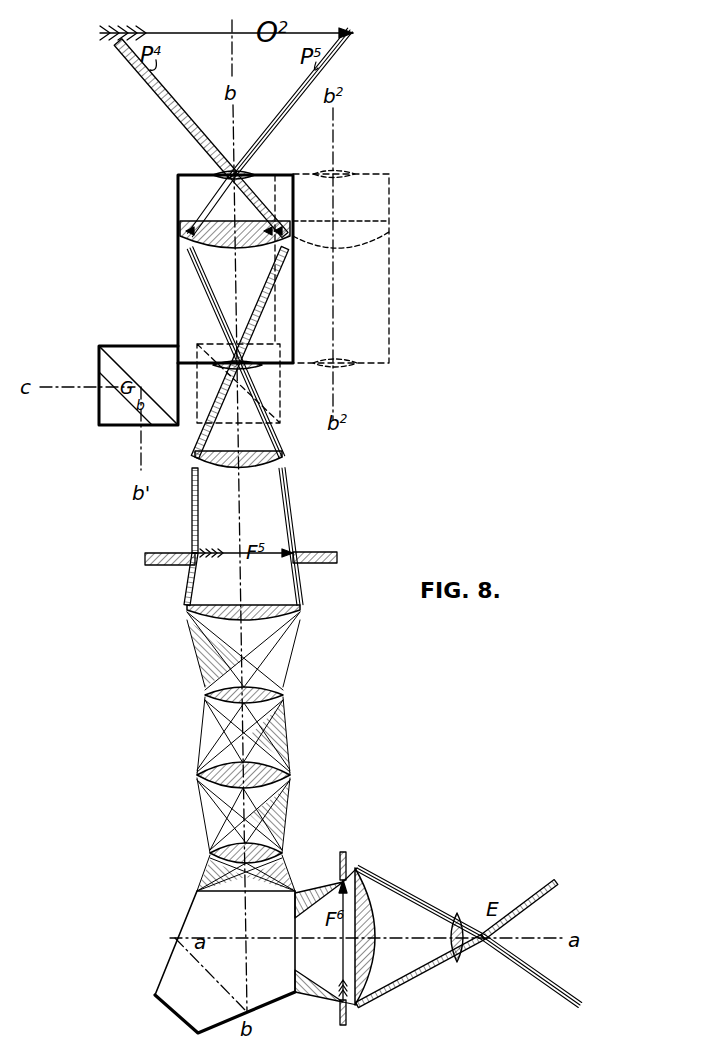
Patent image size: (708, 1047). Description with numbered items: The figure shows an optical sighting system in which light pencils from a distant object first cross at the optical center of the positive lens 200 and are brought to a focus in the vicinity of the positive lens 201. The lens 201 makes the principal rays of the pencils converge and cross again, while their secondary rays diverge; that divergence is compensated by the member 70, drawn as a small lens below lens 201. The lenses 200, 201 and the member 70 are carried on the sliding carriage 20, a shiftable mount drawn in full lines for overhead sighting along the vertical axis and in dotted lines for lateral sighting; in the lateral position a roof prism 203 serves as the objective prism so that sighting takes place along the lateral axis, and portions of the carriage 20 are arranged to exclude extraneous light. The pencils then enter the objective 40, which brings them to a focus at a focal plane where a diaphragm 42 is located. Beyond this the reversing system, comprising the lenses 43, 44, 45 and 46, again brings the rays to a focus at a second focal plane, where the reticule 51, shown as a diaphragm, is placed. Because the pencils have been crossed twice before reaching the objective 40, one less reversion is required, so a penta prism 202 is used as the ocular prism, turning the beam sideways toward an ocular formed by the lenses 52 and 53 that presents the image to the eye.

The sliding carriage 20 is at (177, 268).
The positive lens 200 is at (215, 176).
The positive lens 201 is at (180, 236).
The member 70 is at (258, 369).
The roof prism 203 is at (99, 425).
The objective 40 is at (246, 468).
The diaphragm 42 is at (148, 556).
The lens 43 is at (187, 608).
The lens 44 is at (205, 695).
The lens 45 is at (197, 775).
The lens 46 is at (210, 853).
The penta prism 202 is at (176, 970).
The reticule 51 is at (345, 866).
The lens 52 is at (376, 935).
The lens 53 is at (460, 962).